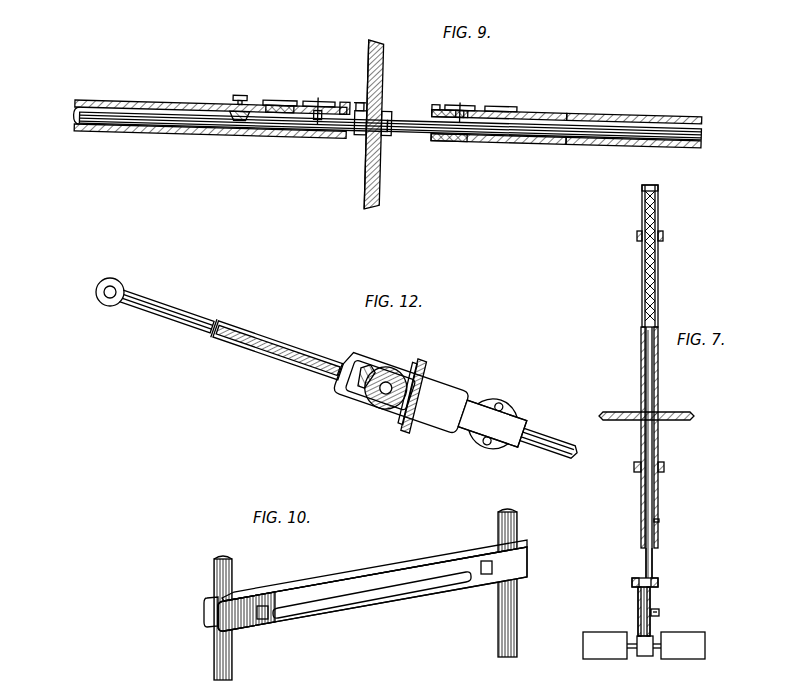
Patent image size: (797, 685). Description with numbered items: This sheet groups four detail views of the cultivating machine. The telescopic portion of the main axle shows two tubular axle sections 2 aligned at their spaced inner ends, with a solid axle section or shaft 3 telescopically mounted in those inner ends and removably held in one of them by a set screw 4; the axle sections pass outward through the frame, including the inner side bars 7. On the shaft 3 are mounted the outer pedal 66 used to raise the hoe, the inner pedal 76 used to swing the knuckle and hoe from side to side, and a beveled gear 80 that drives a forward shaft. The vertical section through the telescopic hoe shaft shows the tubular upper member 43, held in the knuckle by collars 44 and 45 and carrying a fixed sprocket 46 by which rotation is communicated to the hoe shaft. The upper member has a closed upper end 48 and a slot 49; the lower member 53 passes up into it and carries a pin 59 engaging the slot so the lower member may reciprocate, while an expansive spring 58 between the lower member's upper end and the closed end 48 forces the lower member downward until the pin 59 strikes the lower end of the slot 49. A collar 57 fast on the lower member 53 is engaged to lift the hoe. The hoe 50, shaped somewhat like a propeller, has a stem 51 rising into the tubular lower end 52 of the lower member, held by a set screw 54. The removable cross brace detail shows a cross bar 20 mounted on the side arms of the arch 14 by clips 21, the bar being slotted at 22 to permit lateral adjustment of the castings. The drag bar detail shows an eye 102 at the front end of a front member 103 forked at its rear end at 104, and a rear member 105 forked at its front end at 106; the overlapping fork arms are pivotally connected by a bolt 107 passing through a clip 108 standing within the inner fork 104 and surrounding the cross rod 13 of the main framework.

In FIG. 9, the tubular axle section 2 is at (133, 100).
In FIG. 9, the solid axle section or shaft 3 is at (536, 100).
In FIG. 9, the set screw 4 is at (243, 96).
In FIG. 9, the inner side bar 7 is at (640, 100).
In FIG. 9, the pedal 66 is at (282, 95).
In FIG. 9, the pedal 76 is at (320, 95).
In FIG. 9, the beveled gear 80 is at (383, 56).
In FIG. 7, the closed upper end 48 is at (659, 188).
In FIG. 7, the collar 44 is at (637, 236).
In FIG. 7, the expansive spring 58 is at (663, 235).
In FIG. 7, the tubular upper member 43 is at (659, 286).
In FIG. 7, the sprocket 46 is at (672, 412).
In FIG. 7, the collar 45 is at (634, 467).
In FIG. 7, the slot 49 is at (658, 494).
In FIG. 7, the pin 59 is at (659, 521).
In FIG. 7, the lower member 53 is at (654, 557).
In FIG. 7, the collar 57 is at (659, 580).
In FIG. 7, the stem 51 is at (651, 606).
In FIG. 7, the set screw 54 is at (659, 614).
In FIG. 7, the tubular lower end 52 is at (640, 604).
In FIG. 7, the hoe 50 is at (690, 634).
In FIG. 12, the eye 102 is at (118, 286).
In FIG. 12, the front member 103 is at (270, 346).
In FIG. 12, the fork 104 is at (381, 357).
In FIG. 12, the bolt 107 is at (425, 366).
In FIG. 12, the fork 106 is at (462, 385).
In FIG. 12, the clip 108 is at (368, 385).
In FIG. 12, the cross rod 13 is at (378, 398).
In FIG. 12, the rear member 105 is at (545, 432).
In FIG. 10, the arch 14 is at (214, 648).
In FIG. 10, the cross bar 20 is at (315, 585).
In FIG. 10, the clip 21 is at (236, 600).
In FIG. 10, the slot 22 is at (430, 573).